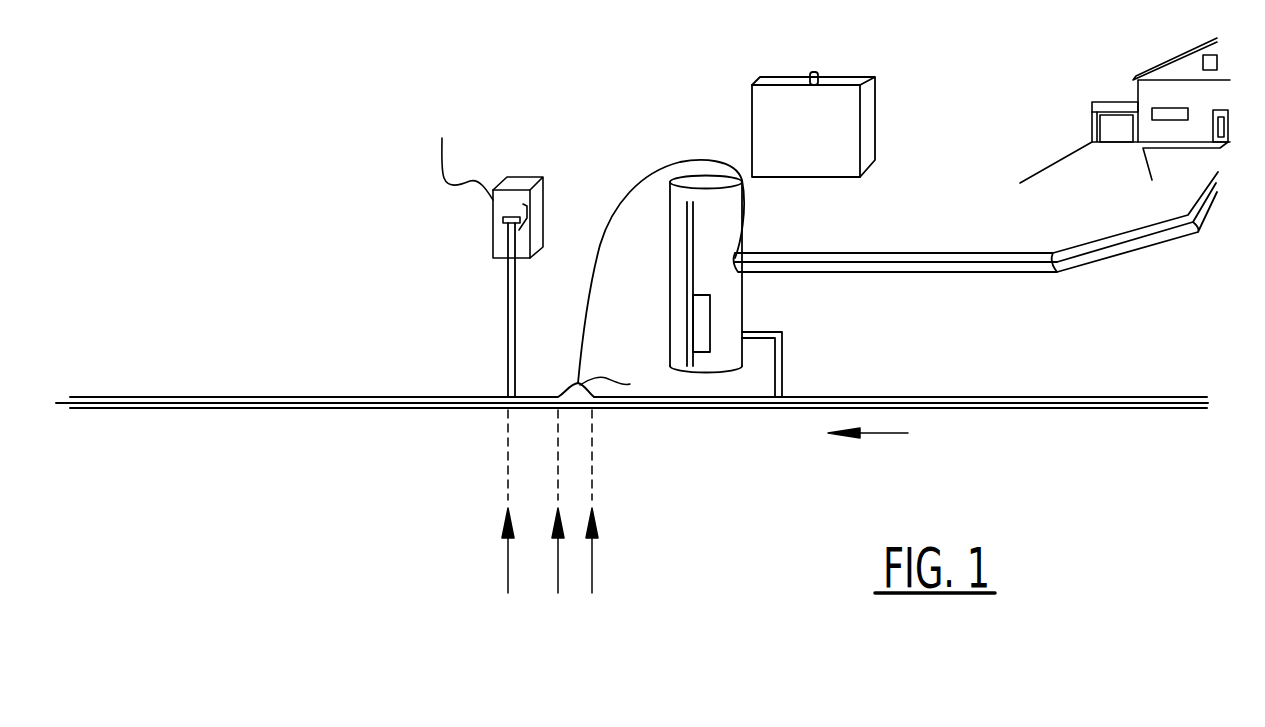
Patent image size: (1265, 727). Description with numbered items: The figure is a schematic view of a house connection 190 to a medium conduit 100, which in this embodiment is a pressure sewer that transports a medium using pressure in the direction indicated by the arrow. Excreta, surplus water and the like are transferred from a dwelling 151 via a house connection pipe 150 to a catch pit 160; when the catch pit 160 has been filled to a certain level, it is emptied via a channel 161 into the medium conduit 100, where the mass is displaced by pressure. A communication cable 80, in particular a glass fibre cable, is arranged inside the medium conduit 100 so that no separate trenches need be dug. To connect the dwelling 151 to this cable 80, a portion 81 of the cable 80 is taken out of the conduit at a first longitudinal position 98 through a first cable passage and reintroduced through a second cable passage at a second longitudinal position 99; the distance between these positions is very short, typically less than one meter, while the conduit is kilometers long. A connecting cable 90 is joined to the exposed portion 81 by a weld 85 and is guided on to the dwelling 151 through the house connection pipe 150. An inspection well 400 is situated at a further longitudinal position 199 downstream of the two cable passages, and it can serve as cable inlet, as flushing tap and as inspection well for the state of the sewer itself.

The medium conduit 100 is at (328, 408).
The inspection well 400 is at (482, 182).
The communication cable 80 is at (532, 408).
The weld 85 is at (550, 346).
The portion of cable 81 is at (630, 384).
The catch pit 160 is at (677, 213).
The connecting cable 90 is at (858, 262).
The house connection pipe 150 is at (944, 303).
The channel 161 is at (782, 360).
The dwelling 151 is at (1098, 118).
The further longitudinal position 199 is at (506, 571).
The second longitudinal position 99 is at (560, 522).
The first longitudinal position 98 is at (596, 522).
The house connection 190 is at (668, 504).